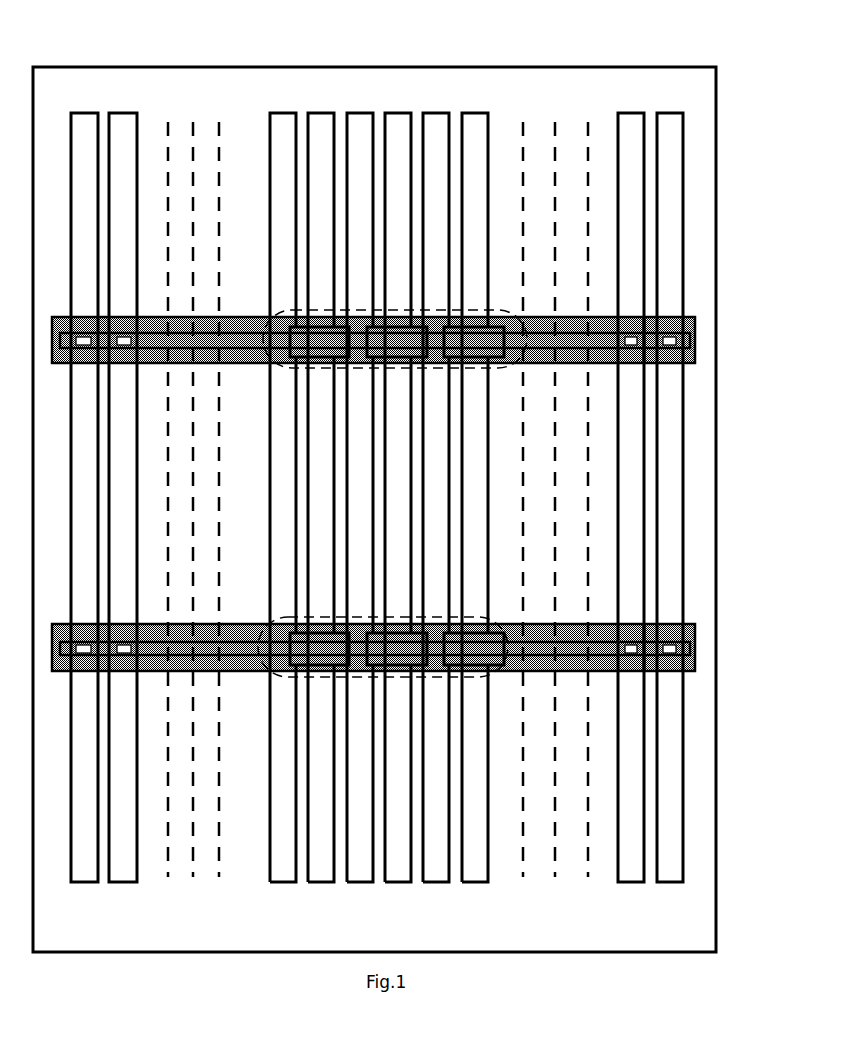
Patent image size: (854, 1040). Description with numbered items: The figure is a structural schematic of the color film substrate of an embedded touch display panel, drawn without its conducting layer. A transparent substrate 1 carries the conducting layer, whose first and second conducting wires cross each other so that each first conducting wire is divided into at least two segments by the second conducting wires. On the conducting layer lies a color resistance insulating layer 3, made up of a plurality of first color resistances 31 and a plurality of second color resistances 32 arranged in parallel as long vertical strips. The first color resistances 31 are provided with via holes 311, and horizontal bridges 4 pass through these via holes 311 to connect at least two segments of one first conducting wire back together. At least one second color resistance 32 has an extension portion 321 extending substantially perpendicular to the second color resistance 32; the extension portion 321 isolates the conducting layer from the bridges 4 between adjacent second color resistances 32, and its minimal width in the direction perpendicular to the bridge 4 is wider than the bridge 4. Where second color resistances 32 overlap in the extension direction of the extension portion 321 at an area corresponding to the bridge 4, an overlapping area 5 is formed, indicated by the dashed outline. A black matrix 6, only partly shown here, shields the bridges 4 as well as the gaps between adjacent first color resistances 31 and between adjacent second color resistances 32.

The transparent substrate 1 is at (716, 145).
The color resistance insulating layer 3 is at (670, 892).
The first color resistance 31 is at (638, 112).
The via hole 311 is at (645, 317).
The second color resistance 32 is at (352, 113).
The extension portion 321 is at (310, 327).
The bridge 4 is at (695, 320).
The overlapping area 5 is at (452, 328).
The black matrix 6 is at (695, 355).